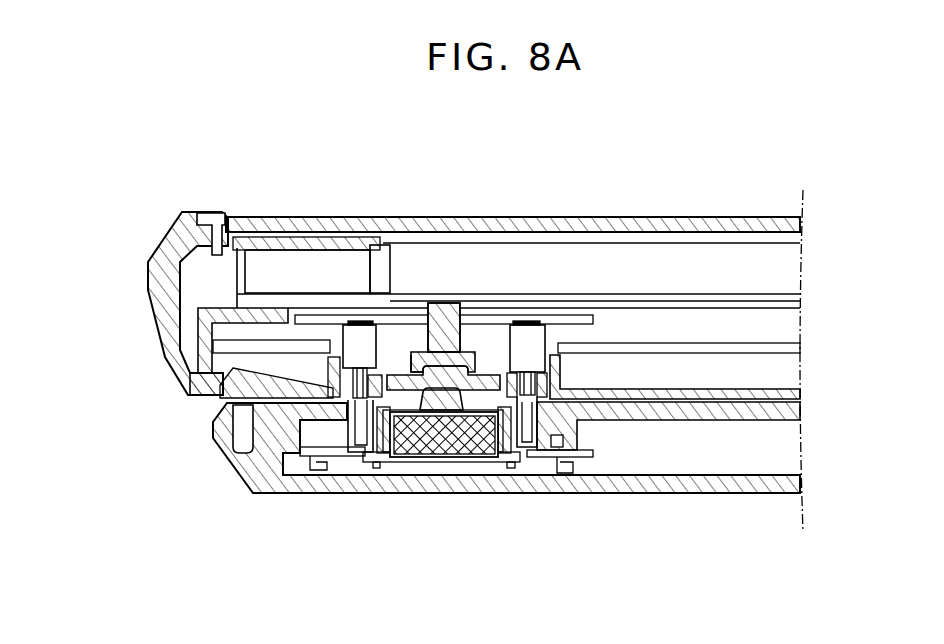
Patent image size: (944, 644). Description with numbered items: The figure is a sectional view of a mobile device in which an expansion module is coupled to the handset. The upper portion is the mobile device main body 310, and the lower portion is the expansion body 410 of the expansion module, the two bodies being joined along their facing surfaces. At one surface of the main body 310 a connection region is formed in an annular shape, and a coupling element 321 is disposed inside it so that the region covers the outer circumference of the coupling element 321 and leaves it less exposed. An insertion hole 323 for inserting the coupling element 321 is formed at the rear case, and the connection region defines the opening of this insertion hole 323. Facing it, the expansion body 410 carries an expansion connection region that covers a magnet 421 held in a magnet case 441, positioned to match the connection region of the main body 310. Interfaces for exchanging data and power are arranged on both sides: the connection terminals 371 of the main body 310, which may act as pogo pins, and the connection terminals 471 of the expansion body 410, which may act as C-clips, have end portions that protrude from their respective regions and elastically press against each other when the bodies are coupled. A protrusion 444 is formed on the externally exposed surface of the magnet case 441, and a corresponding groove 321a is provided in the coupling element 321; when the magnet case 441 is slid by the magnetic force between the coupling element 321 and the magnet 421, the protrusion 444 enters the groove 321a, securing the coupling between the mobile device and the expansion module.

The mobile device main body 310 is at (143, 242).
The expansion body 410 is at (213, 468).
The coupling element 321 is at (431, 316).
The groove 321a is at (406, 372).
The insertion hole 323 is at (490, 372).
The connection terminal 371 is at (533, 342).
The connection terminal 471 is at (553, 392).
The protrusion 444 is at (433, 392).
The magnet 421 is at (433, 433).
The magnet case 441 is at (517, 427).